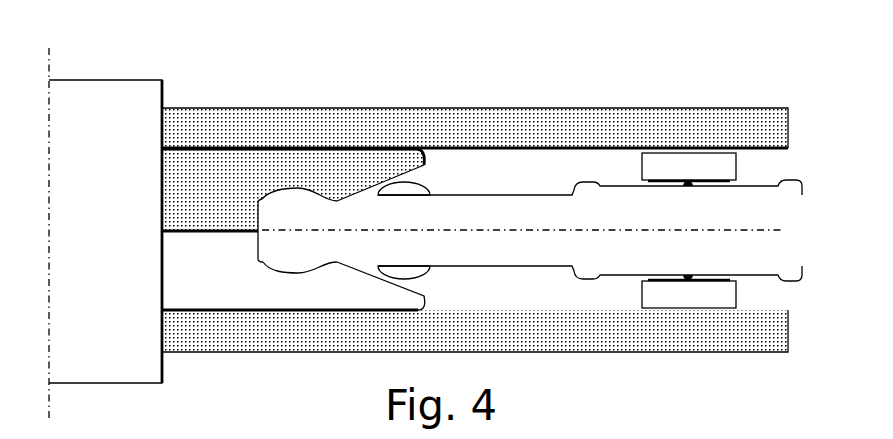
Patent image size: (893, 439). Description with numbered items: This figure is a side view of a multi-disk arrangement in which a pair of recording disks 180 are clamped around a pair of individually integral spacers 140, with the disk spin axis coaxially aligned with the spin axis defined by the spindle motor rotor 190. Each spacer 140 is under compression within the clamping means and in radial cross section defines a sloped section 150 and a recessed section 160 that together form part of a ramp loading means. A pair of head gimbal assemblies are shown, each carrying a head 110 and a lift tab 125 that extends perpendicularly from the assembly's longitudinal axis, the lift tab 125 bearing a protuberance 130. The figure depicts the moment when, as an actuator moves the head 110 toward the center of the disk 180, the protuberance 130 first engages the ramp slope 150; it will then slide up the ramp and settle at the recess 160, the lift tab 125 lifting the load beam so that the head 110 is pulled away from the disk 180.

The rotor 190 is at (124, 73).
The disk 180 is at (764, 112).
The spacer 140 is at (293, 170).
The recessed section 160 is at (297, 172).
The sloped section 150 is at (370, 172).
The protuberance 130 is at (427, 166).
The lift tab 125 is at (500, 181).
The head 110 is at (688, 154).